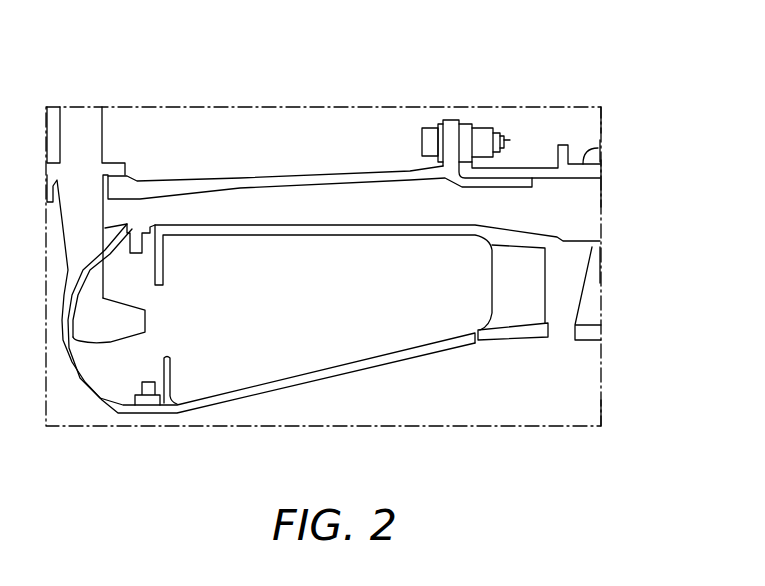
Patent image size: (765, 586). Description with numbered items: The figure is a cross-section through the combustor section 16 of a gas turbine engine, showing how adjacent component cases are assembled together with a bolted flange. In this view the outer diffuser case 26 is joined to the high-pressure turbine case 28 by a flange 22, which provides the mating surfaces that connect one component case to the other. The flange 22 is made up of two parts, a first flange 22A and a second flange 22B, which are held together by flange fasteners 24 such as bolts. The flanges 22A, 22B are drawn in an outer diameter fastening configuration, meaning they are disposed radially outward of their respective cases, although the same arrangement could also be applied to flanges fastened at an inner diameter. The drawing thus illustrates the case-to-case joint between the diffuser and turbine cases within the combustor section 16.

The combustor section 16 is at (172, 133).
The outer diffuser case 26 is at (280, 176).
The flange 22 is at (494, 97).
The second flange 22B is at (450, 117).
The first flange 22A is at (457, 112).
The flange fasteners 24 is at (505, 141).
The high-pressure turbine case 28 is at (600, 148).